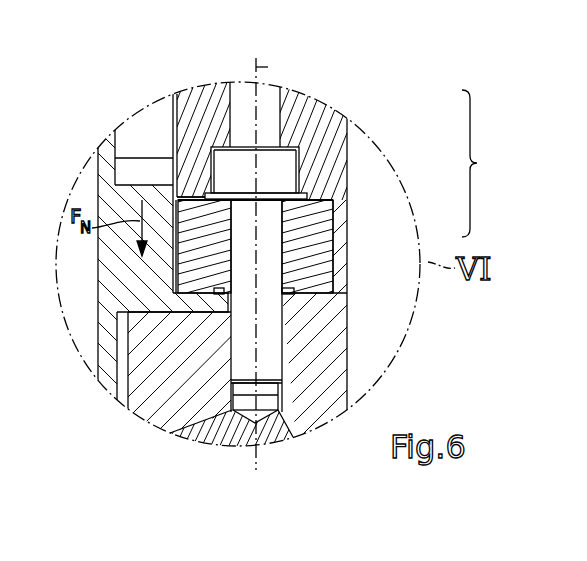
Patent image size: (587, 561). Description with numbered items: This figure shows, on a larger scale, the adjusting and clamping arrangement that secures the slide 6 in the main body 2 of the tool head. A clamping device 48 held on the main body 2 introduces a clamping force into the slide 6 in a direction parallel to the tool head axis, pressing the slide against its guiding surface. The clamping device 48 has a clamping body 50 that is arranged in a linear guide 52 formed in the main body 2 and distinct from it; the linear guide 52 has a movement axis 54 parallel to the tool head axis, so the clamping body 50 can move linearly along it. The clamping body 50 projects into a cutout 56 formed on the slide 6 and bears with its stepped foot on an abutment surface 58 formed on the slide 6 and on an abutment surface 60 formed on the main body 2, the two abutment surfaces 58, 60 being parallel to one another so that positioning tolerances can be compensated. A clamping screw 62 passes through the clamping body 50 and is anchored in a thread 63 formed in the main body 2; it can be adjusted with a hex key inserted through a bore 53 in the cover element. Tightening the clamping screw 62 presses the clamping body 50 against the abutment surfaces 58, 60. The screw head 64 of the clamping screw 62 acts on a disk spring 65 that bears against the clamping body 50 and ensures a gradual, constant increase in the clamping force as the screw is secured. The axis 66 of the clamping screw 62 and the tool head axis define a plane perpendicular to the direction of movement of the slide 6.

The main body 2 is at (335, 382).
The slide 6 is at (103, 190).
The clamping device 48 is at (487, 163).
The clamping body 50 is at (322, 207).
The linear guide 52 is at (310, 193).
The bore 53 is at (240, 93).
The movement axis 54 is at (268, 67).
The cutout 56 is at (189, 178).
The abutment surface 58 is at (190, 292).
The abutment surface 60 is at (315, 293).
The clamping screw 62 is at (272, 223).
The thread 63 is at (281, 388).
The screw head 64 is at (295, 161).
The disk spring 65 is at (302, 190).
The axis 66 is at (256, 348).